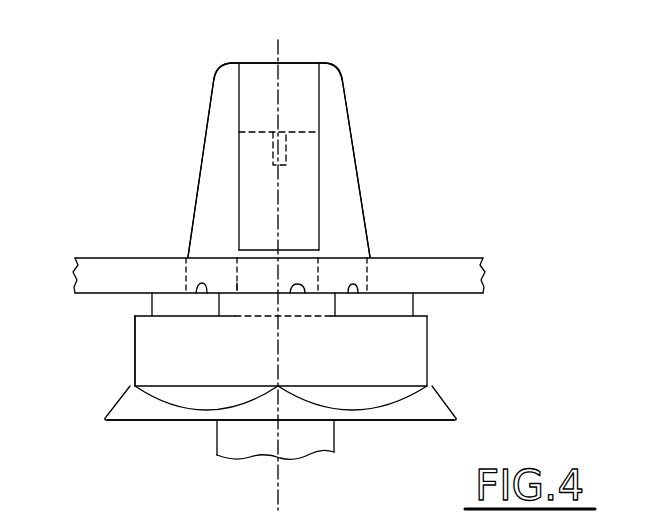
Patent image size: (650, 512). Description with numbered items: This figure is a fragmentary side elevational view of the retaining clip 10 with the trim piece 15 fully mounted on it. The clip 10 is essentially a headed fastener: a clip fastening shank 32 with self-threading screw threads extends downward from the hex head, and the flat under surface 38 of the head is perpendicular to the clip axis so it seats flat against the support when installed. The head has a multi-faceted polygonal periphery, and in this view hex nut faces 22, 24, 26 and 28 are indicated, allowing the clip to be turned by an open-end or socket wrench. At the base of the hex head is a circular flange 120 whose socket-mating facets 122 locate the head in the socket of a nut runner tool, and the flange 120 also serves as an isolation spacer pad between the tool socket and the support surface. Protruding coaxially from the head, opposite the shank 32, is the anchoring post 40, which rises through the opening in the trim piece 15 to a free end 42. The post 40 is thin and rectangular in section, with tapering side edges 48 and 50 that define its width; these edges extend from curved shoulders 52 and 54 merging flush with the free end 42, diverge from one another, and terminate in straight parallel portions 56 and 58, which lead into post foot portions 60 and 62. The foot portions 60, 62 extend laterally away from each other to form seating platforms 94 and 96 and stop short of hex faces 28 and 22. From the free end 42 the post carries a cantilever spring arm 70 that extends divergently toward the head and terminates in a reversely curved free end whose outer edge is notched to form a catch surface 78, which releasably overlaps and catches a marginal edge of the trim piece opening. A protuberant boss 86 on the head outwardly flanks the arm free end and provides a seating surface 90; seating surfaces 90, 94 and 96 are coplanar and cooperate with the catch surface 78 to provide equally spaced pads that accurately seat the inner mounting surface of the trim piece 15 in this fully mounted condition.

The retaining clip 10 is at (185, 106).
The trim piece 15 is at (97, 257).
The hex nut face 22 is at (428, 340).
The hex nut face 24 is at (408, 375).
The hex nut face 26 is at (218, 377).
The hex nut face 28 is at (135, 350).
The clip fastening shank 32 is at (217, 455).
The under surface of head 38 is at (407, 422).
The anchoring post 40 is at (202, 160).
The free end of post 42 is at (297, 63).
The tapering side edge 48 is at (196, 205).
The tapering side edge 50 is at (353, 167).
The curved shoulder 52 is at (220, 73).
The curved shoulder 54 is at (339, 71).
The straight parallel portion 56 is at (188, 256).
The straight parallel portion 58 is at (372, 257).
The post foot portion 60 is at (160, 303).
The post foot portion 62 is at (413, 303).
The spring arm 70 is at (320, 142).
The catch surface 78 is at (300, 253).
The protuberant boss 86 is at (252, 307).
The seating surface 90 is at (305, 296).
The seating platform 94 is at (199, 296).
The seating platform 96 is at (358, 296).
The circular flange 120 is at (118, 397).
The socket-mating facets 122 is at (187, 400).